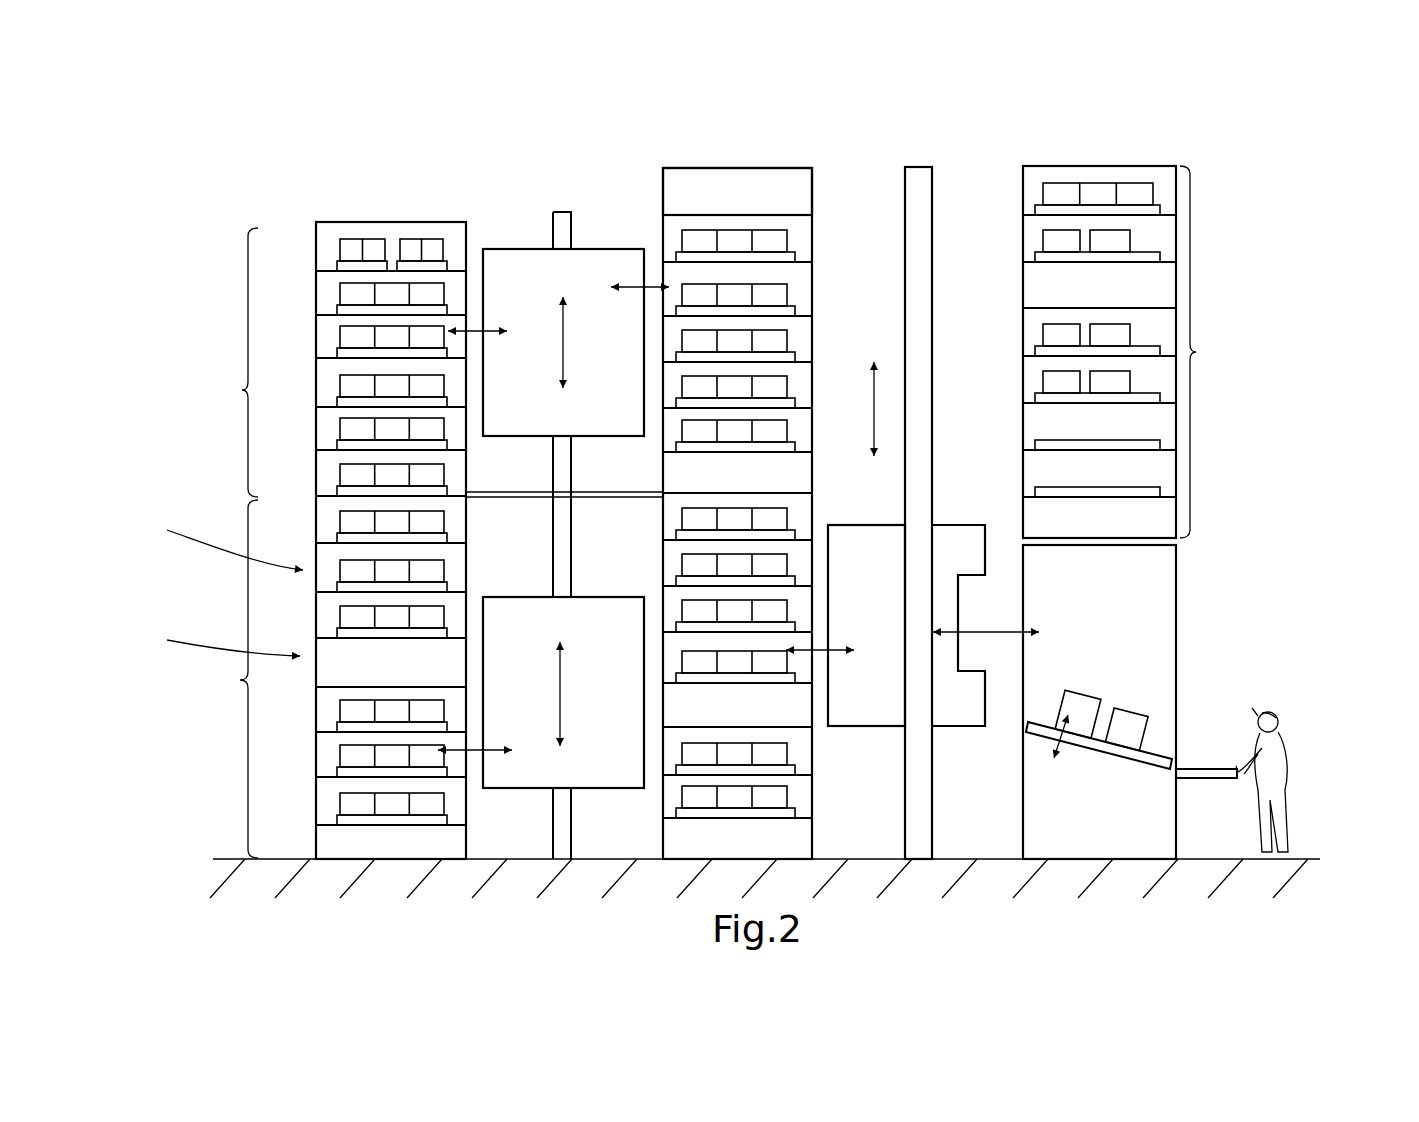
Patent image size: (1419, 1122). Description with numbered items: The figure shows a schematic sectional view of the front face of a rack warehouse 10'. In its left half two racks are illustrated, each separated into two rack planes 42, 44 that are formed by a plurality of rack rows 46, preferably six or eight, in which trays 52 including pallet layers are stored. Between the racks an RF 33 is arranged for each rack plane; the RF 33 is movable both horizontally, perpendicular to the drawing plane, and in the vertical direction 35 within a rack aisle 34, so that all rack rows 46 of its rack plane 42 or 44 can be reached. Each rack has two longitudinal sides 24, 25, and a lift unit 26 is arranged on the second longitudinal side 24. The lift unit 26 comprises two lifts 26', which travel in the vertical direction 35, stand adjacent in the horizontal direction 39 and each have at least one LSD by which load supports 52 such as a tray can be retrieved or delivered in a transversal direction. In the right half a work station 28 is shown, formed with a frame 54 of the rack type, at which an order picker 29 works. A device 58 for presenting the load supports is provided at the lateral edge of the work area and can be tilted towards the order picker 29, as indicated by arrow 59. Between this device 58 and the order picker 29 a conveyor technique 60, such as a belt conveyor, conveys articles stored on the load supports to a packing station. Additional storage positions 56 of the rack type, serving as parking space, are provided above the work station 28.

The rack warehouse 10' is at (320, 471).
The second longitudinal side 24 is at (817, 197).
The longitudinal side 25 is at (658, 205).
The lift unit 26 is at (967, 552).
The lift 26' is at (866, 669).
The work station 28 is at (1236, 623).
The order picker 29 is at (1288, 748).
The RF 33 is at (510, 249).
The rack aisle 34 is at (532, 203).
The vertical direction 35 is at (565, 341).
The horizontal direction 39 is at (483, 328).
The rack plane 42 is at (235, 362).
The rack plane 44 is at (235, 679).
The rack rows 46 is at (221, 584).
The tray 52 is at (338, 333).
The frame 54 is at (1178, 592).
The additional storage positions 56 is at (1130, 352).
The device for presenting the load supports 58 is at (1145, 762).
The arrow 59 is at (1053, 765).
The conveyor technique 60 is at (1200, 768).